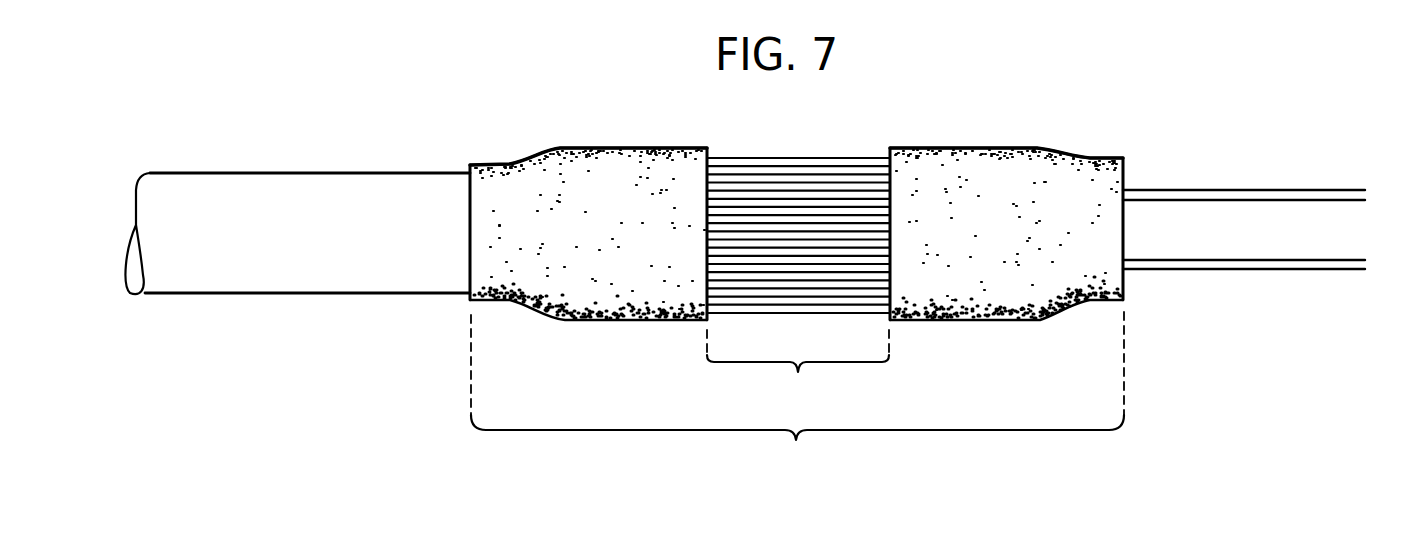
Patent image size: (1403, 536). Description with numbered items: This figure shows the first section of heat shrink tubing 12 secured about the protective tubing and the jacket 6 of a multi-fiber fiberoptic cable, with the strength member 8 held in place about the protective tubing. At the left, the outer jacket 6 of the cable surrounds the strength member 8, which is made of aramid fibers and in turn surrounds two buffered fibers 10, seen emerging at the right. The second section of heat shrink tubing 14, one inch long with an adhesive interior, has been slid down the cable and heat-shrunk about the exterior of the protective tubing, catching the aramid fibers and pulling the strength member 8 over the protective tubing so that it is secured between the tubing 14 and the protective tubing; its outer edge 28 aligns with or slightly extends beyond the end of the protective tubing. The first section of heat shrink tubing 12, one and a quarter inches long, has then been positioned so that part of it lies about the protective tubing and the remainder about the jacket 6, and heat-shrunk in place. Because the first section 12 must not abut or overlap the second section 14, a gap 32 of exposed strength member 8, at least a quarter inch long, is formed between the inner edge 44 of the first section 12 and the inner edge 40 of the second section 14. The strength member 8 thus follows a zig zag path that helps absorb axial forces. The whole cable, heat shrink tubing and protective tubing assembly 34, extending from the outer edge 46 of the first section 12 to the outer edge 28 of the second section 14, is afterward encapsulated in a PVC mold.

The outer jacket 6 is at (352, 185).
The strength member 8 is at (797, 167).
The buffered fibers 10 is at (1322, 263).
The first section of heat shrink tubing 12 is at (629, 177).
The second section of heat shrink tubing 14 is at (1000, 172).
The outer edge of second section of heat shrink tubing 28 is at (1125, 178).
The gap 32 is at (798, 372).
The cable, heat shrink tubing, protective tubing assembly 34 is at (797, 401).
The inner edge of second section of heat shrink tubing 40 is at (882, 170).
The inner edge of first section of heat shrink tubing 44 is at (724, 158).
The outer edge of first section of heat shrink tubing 46 is at (468, 196).